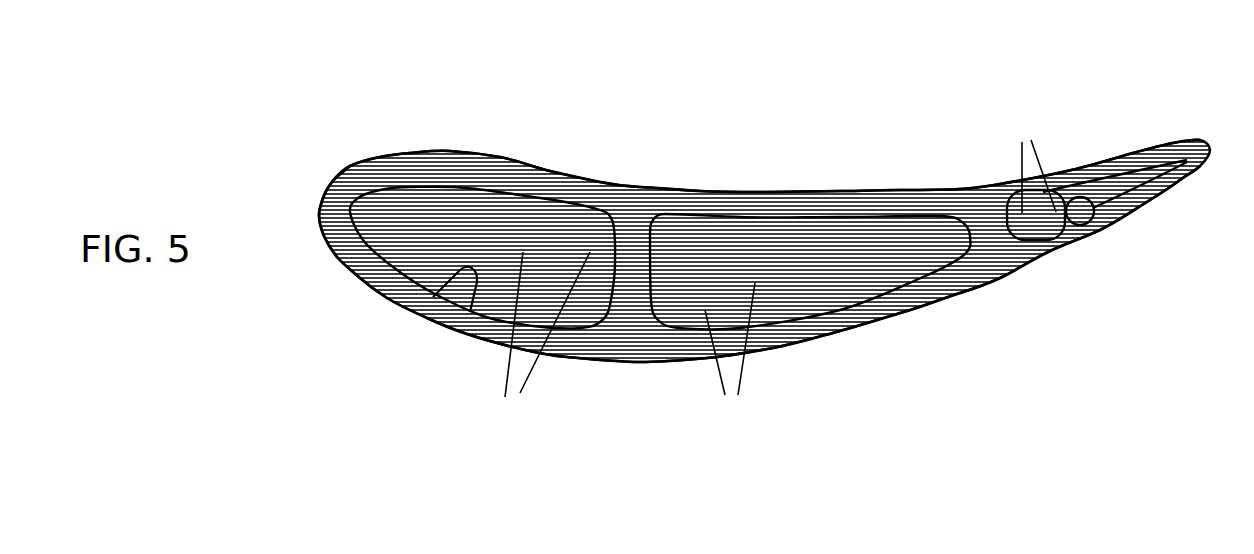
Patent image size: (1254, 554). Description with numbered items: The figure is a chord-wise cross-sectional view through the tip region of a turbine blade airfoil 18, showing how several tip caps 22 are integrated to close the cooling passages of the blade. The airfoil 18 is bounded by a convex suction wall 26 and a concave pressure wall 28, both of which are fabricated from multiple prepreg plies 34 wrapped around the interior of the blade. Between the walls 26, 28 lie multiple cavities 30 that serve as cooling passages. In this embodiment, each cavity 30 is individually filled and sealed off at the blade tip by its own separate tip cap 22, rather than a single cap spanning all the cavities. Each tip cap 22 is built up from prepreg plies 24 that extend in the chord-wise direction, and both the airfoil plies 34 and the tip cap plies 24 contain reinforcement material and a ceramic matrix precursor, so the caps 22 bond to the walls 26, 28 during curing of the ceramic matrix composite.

The airfoil 18 is at (366, 88).
The tip cap 22 is at (557, 200).
The prepreg plies 24 is at (774, 270).
The convex (suction) wall 26 is at (867, 190).
The concave (pressure) wall 28 is at (897, 317).
The cavity (cooling passage) 30 is at (433, 297).
The airfoil plies 34 is at (343, 233).